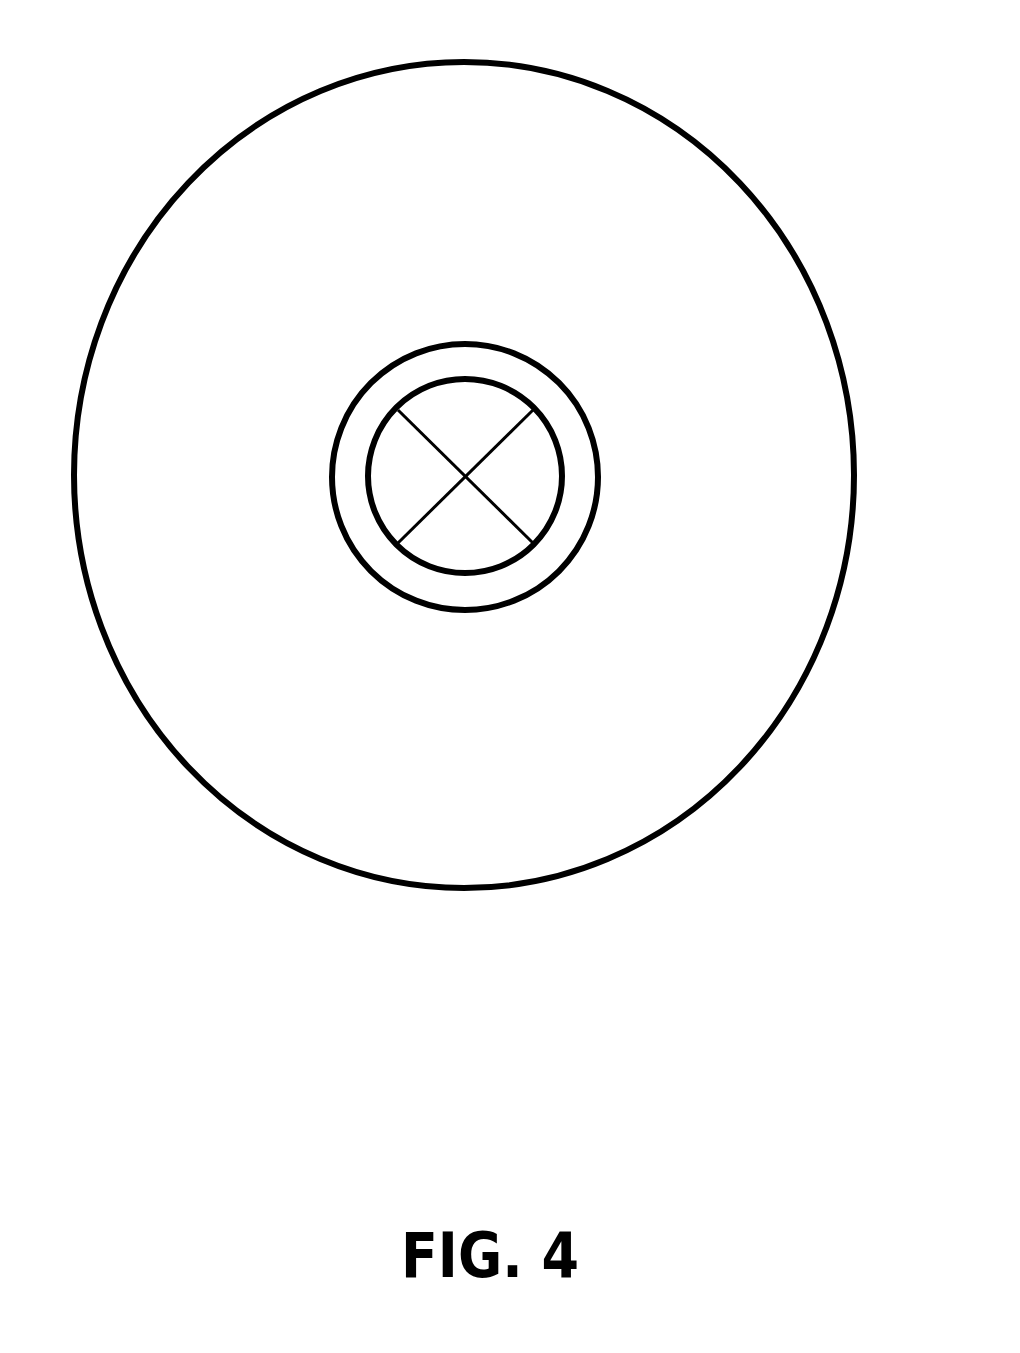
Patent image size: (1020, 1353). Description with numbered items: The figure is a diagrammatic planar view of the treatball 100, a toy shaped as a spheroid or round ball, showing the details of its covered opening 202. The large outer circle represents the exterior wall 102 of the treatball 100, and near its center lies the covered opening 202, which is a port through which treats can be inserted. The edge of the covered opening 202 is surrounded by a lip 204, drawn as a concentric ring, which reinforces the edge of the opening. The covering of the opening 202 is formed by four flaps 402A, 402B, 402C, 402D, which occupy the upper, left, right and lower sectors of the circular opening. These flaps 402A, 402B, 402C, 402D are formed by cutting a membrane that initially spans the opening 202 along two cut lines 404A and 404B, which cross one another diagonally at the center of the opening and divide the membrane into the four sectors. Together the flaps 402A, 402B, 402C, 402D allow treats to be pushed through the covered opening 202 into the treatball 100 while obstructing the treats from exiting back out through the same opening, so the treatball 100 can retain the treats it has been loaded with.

The treatball 100 is at (702, 44).
The exterior wall 102 is at (172, 195).
The covered opening 202 is at (464, 482).
The lip 204 is at (413, 572).
The flap 402A is at (503, 430).
The flap 402B is at (449, 487).
The flap 402C is at (559, 487).
The flap 402D is at (465, 523).
The cut line 404A is at (525, 416).
The cut line 404B is at (525, 533).